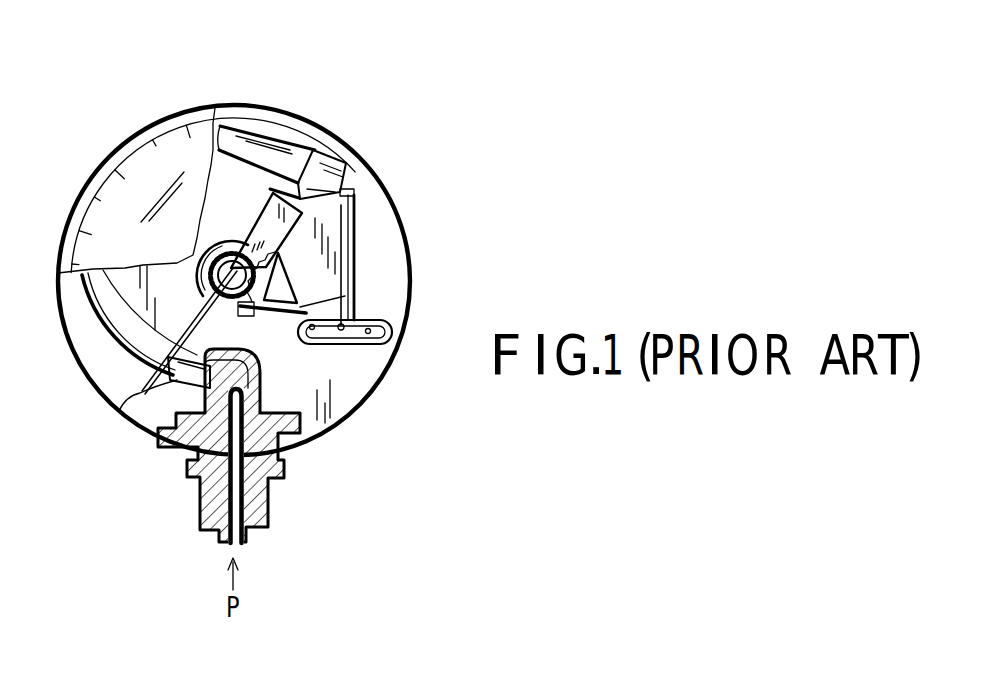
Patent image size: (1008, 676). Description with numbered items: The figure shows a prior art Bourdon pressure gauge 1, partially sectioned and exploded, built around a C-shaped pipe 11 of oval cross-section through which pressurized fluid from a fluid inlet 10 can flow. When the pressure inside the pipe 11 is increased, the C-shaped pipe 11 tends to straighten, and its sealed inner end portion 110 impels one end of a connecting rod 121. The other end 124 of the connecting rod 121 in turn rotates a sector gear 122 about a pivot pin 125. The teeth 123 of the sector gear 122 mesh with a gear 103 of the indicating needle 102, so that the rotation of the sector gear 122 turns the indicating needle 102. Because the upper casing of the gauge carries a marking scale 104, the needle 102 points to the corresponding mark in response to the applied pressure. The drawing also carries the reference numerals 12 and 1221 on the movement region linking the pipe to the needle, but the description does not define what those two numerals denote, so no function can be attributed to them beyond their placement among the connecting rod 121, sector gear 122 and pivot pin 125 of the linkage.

The Bourdon pressure gauge 1 is at (237, 89).
The fluid inlet 10 is at (246, 543).
The C-shaped pipe 11 is at (295, 128).
The sealed inner end portion 110 is at (342, 180).
The indicating needle 102 is at (122, 405).
The gear 103 is at (232, 266).
The marking scale 104 is at (118, 206).
The movement 12 is at (333, 360).
The connecting rod 121 is at (356, 243).
The sector gear 122 is at (298, 322).
The teeth 123 is at (248, 316).
The other end of the connecting rod 124 is at (350, 346).
The pin 1221 is at (371, 324).
The pivot pin 125 is at (343, 292).